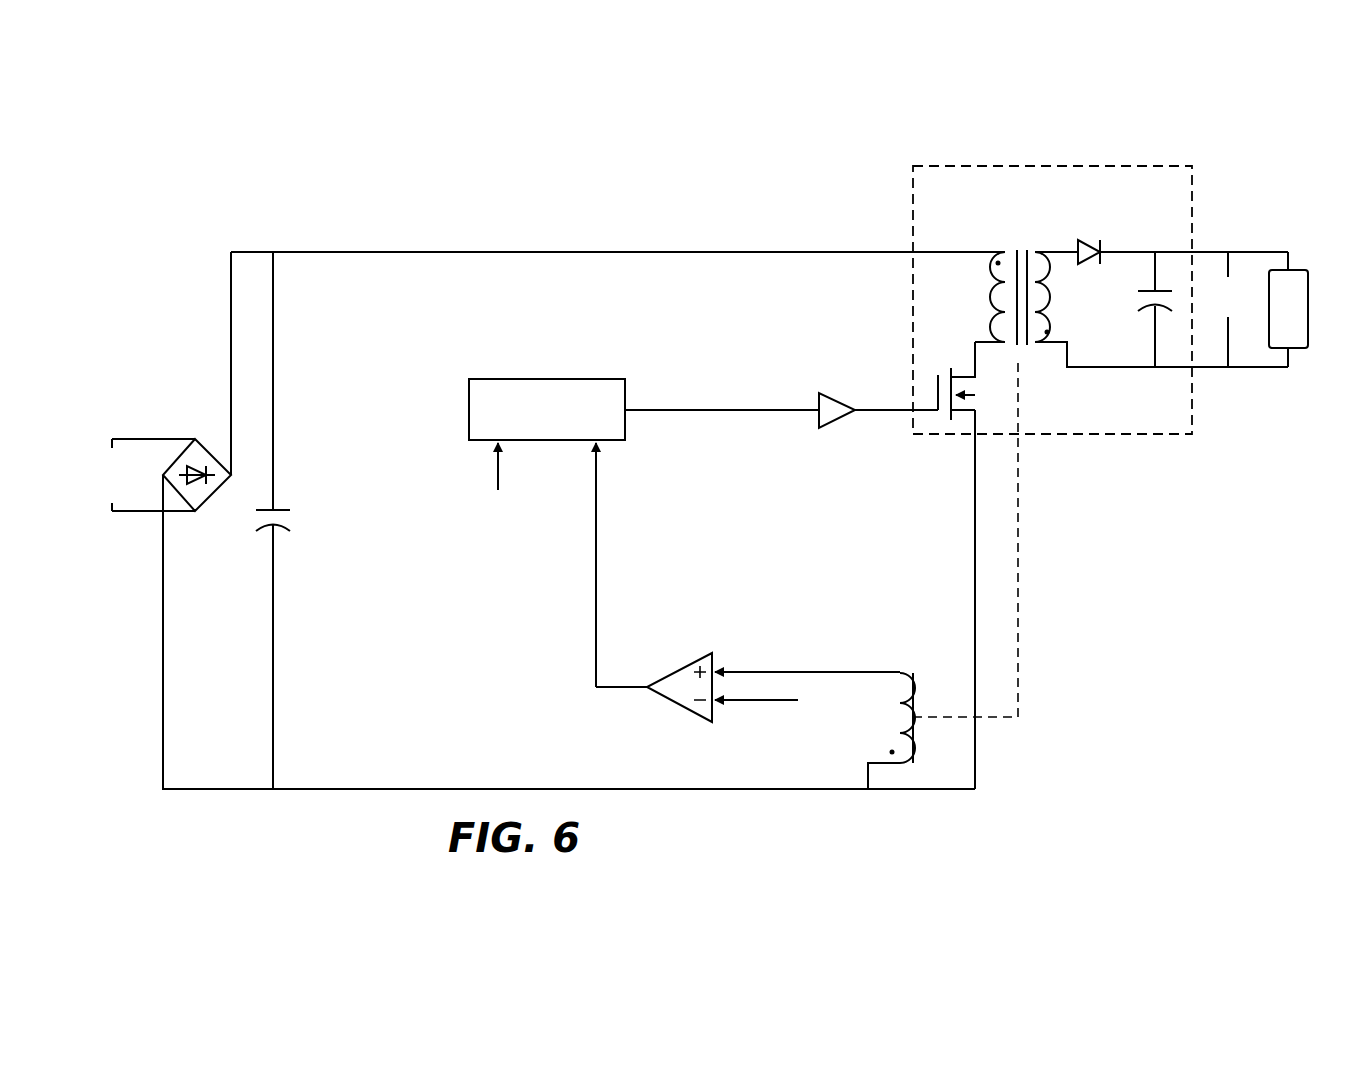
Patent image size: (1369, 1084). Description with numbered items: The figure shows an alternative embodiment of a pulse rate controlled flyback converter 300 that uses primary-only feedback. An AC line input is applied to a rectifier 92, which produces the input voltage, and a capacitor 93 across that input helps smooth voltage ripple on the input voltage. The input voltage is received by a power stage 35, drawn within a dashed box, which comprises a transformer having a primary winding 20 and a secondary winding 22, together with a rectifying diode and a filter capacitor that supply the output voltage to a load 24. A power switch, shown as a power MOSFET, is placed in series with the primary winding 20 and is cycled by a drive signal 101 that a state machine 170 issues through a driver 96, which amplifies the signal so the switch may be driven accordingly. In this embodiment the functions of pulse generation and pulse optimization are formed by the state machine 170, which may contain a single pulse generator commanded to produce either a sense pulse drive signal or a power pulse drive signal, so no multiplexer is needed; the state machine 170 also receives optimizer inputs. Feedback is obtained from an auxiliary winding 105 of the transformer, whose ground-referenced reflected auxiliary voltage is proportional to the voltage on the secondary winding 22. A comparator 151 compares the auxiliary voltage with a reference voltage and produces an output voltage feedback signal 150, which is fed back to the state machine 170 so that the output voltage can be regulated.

The flyback converter 300 is at (527, 175).
The rectifier 92 is at (175, 400).
The capacitor 93 is at (262, 511).
The state machine 170 is at (548, 378).
The drive signal 101 is at (718, 410).
The driver 96 is at (830, 392).
The output voltage feedback signal 150 is at (597, 565).
The comparator 151 is at (690, 715).
The auxiliary winding 105 is at (885, 672).
The power stage 35 is at (1163, 165).
The primary winding 20 is at (1004, 250).
The secondary winding 22 is at (1037, 250).
The load 24 is at (1308, 313).